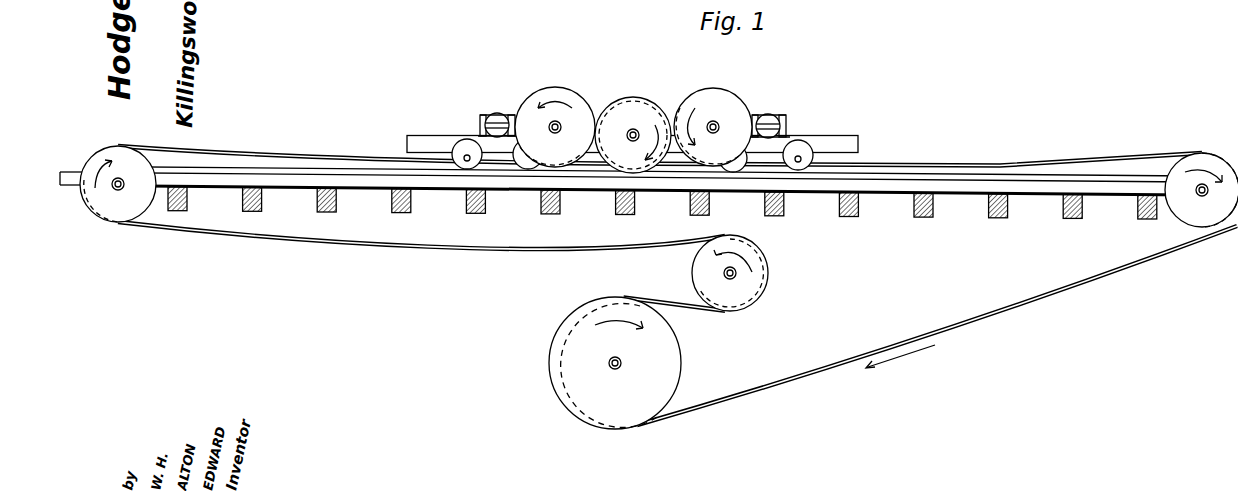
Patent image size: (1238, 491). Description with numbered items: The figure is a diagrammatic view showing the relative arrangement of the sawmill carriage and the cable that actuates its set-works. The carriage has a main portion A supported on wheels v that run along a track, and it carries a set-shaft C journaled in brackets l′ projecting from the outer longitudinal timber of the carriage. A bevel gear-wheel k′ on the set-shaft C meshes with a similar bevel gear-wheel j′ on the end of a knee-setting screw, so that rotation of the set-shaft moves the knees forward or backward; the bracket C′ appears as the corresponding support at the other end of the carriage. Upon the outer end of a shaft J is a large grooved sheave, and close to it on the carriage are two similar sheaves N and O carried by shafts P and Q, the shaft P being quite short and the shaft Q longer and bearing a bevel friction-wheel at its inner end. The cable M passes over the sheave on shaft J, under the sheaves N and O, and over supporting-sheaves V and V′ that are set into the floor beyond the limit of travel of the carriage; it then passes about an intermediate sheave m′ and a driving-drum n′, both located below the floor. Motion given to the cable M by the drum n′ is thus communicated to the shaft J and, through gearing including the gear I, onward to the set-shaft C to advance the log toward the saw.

The main portion of the carriage A is at (455, 134).
The set-shaft C is at (758, 118).
The bracket (left) C′ is at (505, 132).
The gear I is at (633, 135).
The shaft J is at (632, 140).
The cable M is at (365, 157).
The sheave N is at (555, 127).
The sheave O is at (713, 127).
The shaft P is at (549, 127).
The shaft Q is at (713, 134).
The supporting-sheave V is at (118, 184).
The supporting-sheave V′ is at (1201, 190).
The bevel gear-wheel j′ is at (500, 114).
The bevel gear-wheel k′ is at (486, 116).
The brackets l′ is at (632, 125).
The intermediate sheave m′ is at (730, 273).
The driving-drum n′ is at (615, 363).
The wheels v is at (632, 155).